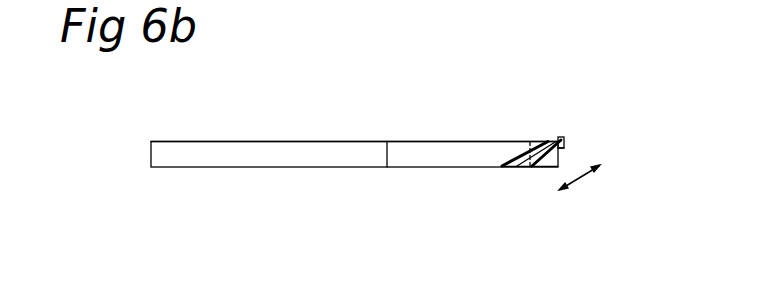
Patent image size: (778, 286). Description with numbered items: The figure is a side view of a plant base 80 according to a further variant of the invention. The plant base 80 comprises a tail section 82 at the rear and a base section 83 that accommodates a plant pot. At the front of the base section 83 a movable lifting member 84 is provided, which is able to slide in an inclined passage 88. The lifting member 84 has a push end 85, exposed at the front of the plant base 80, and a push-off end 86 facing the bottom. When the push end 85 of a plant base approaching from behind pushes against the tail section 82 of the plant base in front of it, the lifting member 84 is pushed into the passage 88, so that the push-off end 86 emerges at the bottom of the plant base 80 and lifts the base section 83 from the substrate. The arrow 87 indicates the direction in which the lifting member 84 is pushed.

The plant base 80 is at (369, 128).
The tail section 82 is at (173, 150).
The base section 83 is at (442, 140).
The movable lifting member 84 is at (561, 136).
The push end 85 is at (565, 134).
The push-off end 86 is at (515, 168).
The direction of motion 87 is at (580, 178).
The passage 88 is at (532, 142).